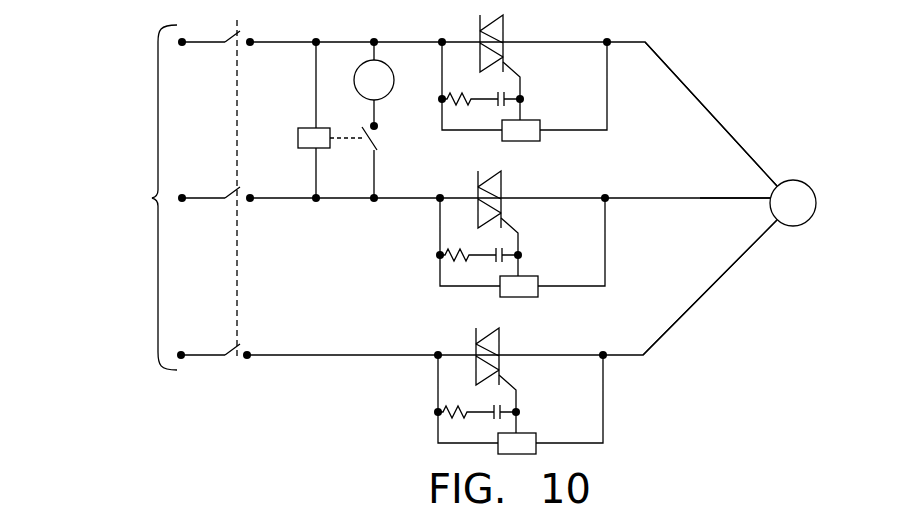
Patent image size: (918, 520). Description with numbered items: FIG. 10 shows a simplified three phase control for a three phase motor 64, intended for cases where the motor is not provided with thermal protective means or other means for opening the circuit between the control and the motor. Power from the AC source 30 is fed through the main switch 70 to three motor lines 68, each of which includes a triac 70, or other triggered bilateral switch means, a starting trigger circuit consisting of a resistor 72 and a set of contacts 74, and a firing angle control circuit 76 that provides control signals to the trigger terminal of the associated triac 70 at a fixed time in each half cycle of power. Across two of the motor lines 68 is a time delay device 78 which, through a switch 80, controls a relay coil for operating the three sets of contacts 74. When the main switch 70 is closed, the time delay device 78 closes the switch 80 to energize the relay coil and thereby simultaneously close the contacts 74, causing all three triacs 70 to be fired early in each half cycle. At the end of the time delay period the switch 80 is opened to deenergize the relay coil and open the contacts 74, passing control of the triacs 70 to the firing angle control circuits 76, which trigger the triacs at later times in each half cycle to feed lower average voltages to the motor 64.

The AC source 30 is at (126, 197).
The three phase motor 64 is at (816, 204).
The motor lines 68 is at (719, 78).
The triac 70 is at (242, 19).
The resistor 72 is at (472, 93).
The contacts 74 is at (520, 82).
The firing angle control circuit 76 is at (540, 137).
The time delay device 78 is at (306, 128).
The switch 80 is at (370, 138).